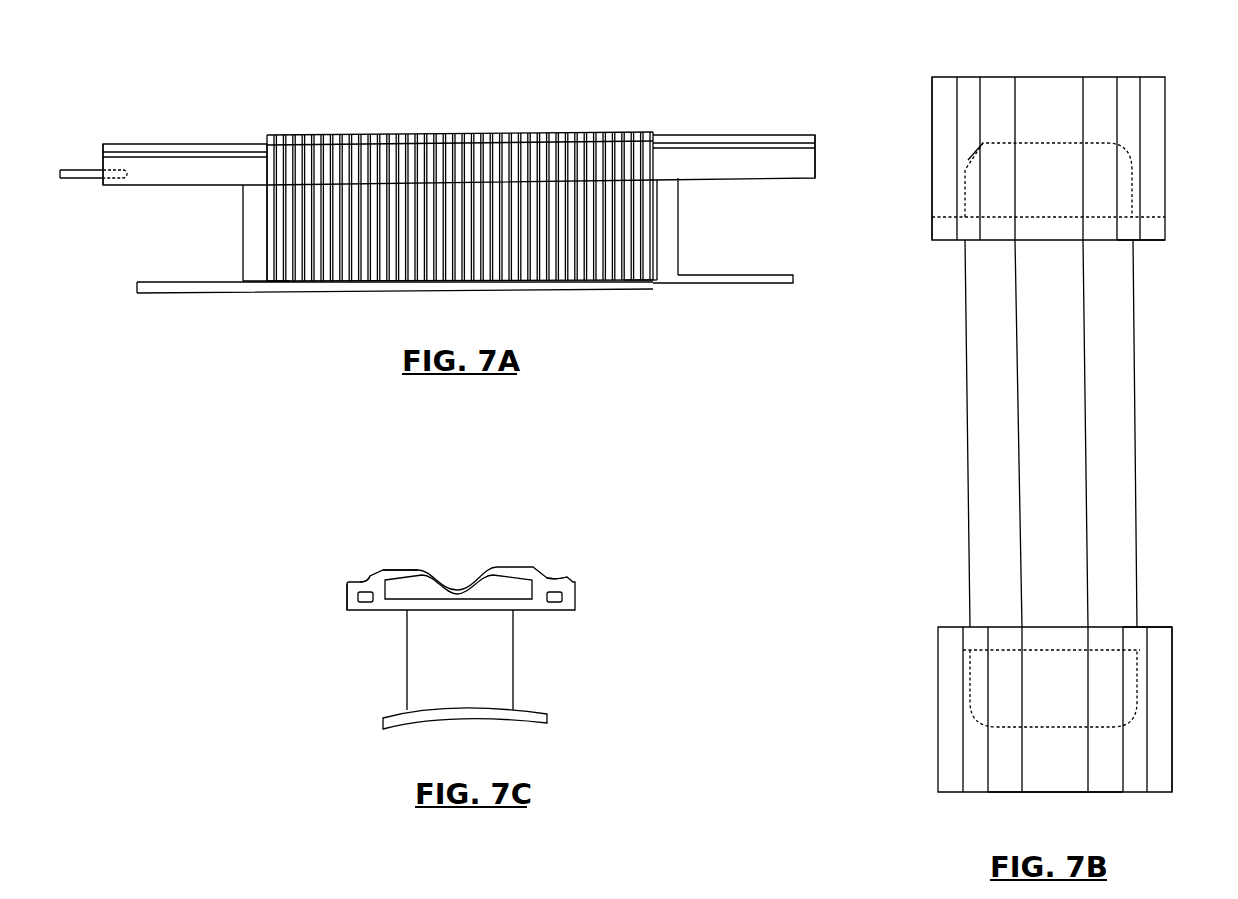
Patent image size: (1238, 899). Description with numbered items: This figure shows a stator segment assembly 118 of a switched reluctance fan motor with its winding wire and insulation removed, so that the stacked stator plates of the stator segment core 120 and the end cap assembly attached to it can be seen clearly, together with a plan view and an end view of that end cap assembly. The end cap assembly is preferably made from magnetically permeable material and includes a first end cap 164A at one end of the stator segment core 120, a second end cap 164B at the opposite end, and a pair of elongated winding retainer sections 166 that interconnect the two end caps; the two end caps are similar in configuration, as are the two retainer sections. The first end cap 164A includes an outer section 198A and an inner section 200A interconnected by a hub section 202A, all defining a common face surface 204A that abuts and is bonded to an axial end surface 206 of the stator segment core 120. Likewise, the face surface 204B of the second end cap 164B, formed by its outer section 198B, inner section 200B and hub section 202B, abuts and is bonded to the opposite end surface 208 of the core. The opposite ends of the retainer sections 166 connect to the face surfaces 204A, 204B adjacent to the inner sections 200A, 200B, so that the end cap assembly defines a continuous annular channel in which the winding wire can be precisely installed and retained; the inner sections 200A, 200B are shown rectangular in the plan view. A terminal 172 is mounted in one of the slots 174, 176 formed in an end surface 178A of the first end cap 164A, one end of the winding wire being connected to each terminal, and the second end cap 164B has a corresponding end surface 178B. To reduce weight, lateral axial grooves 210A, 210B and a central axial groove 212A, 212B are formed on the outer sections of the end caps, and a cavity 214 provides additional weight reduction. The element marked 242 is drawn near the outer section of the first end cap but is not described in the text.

In FIG. 7A, the stator segment assembly 118 is at (587, 97).
In FIG. 7A, the stator segment core 120 is at (455, 113).
In FIG. 7A, the first end cap 164A is at (153, 139).
In FIG. 7C, the first end cap 164A is at (542, 523).
In FIG. 7B, the first end cap 164A is at (912, 102).
In FIG. 7A, the second end cap 164B is at (770, 137).
In FIG. 7B, the second end cap 164B is at (922, 750).
In FIG. 7A, the winding retainer sections 166 is at (402, 287).
In FIG. 7B, the winding retainer sections 166 is at (1002, 355).
In FIG. 7A, the second terminal 172 is at (75, 183).
In FIG. 7C, the slot 174 is at (363, 603).
In FIG. 7C, the slot 176 is at (557, 603).
In FIG. 7A, the end surface 178A is at (102, 160).
In FIG. 7C, the end surface 178A is at (352, 587).
In FIG. 7B, the end surface 178A is at (947, 78).
In FIG. 7A, the end surface 178B is at (817, 160).
In FIG. 7B, the end surface 178B is at (1107, 793).
In FIG. 7A, the outer section 198A is at (178, 177).
In FIG. 7C, the outer section 198A is at (570, 582).
In FIG. 7B, the outer section 198A is at (1147, 117).
In FIG. 7A, the outer section 198B is at (787, 168).
In FIG. 7B, the outer section 198B is at (955, 720).
In FIG. 7A, the inner section 200A is at (192, 290).
In FIG. 7C, the inner section 200A is at (410, 716).
In FIG. 7B, the inner section 200A is at (1040, 140).
In FIG. 7A, the inner section 200B is at (708, 272).
In FIG. 7B, the inner section 200B is at (970, 687).
In FIG. 7A, the hub section 202A is at (252, 235).
In FIG. 7C, the hub section 202A is at (420, 668).
In FIG. 7B, the hub section 202A is at (1022, 233).
In FIG. 7A, the hub section 202B is at (668, 222).
In FIG. 7B, the hub section 202B is at (1028, 635).
In FIG. 7A, the face surface 204A is at (270, 285).
In FIG. 7B, the face surface 204A is at (1147, 242).
In FIG. 7A, the face surface 204B is at (653, 278).
In FIG. 7B, the face surface 204B is at (1148, 625).
In FIG. 7A, the axial end surface 206 is at (267, 192).
In FIG. 7A, the end surface 208 is at (655, 158).
In FIG. 7C, the lateral axial grooves 210A is at (367, 580).
In FIG. 7B, the lateral axial grooves 210A is at (968, 118).
In FIG. 7B, the lateral axial grooves 210B is at (970, 768).
In FIG. 7C, the central axial groove 212A is at (457, 586).
In FIG. 7B, the central axial groove 212A is at (1028, 137).
In FIG. 7B, the central axial groove 212B is at (1038, 768).
In FIG. 7C, the cavity 214 is at (410, 577).
In FIG. 7A, the channel 242 is at (215, 143).